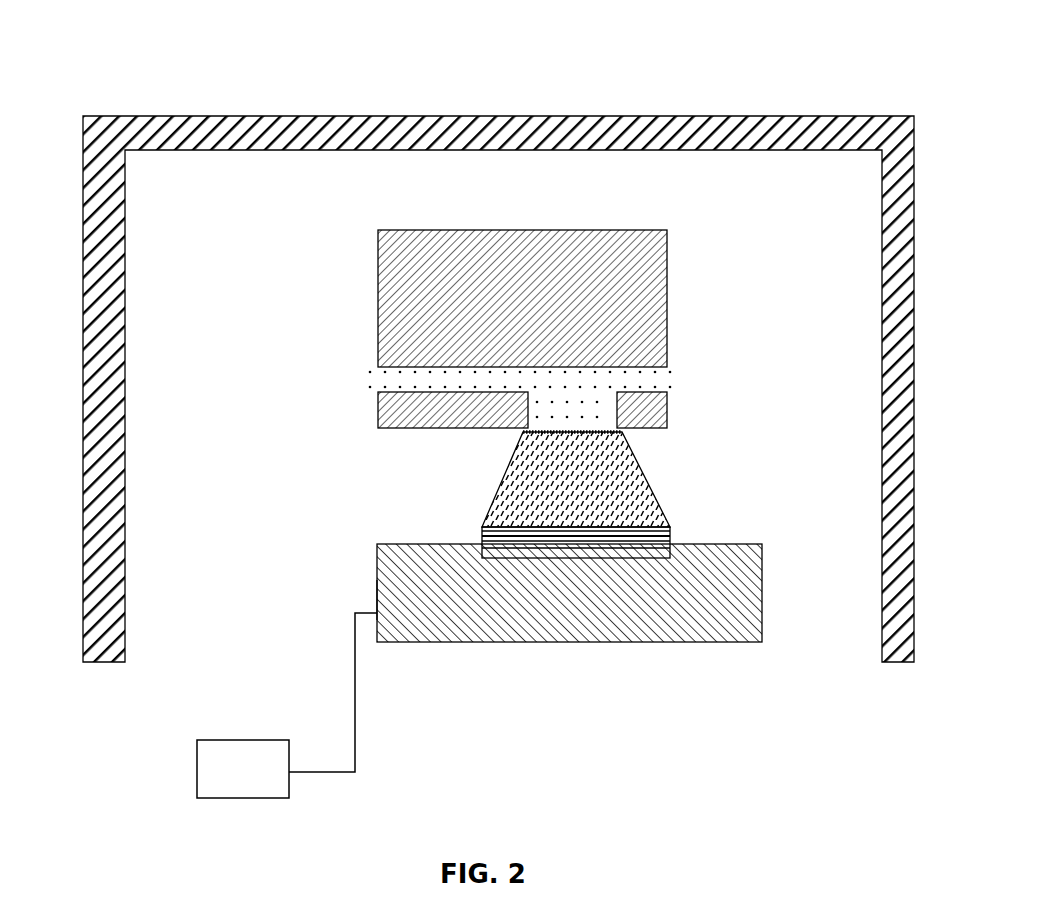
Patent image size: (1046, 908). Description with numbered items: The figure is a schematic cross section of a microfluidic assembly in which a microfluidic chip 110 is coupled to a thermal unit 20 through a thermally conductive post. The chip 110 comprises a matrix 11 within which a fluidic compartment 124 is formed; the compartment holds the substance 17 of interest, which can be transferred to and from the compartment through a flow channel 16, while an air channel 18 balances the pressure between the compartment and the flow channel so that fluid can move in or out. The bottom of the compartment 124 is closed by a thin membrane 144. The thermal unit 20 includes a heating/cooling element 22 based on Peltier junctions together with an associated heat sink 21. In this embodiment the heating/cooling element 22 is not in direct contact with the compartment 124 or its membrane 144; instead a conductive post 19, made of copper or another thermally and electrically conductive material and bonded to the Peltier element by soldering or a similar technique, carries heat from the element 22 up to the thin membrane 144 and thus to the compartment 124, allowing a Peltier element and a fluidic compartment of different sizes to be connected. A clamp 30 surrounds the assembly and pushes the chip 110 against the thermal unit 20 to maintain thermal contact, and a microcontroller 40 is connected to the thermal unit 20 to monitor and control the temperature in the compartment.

The microfluidic chip 110 is at (283, 43).
The clamp 30 is at (497, 117).
The matrix 11 is at (667, 328).
The flow channel 16 is at (673, 374).
The air channel 18 is at (372, 385).
The substance 17 is at (567, 400).
The fluidic compartment 124 is at (528, 400).
The thin membrane 144 is at (622, 433).
The conductive post 19 is at (505, 480).
The heating/cooling element 22 is at (482, 540).
The thermal unit 20 is at (798, 633).
The heat sink 21 is at (377, 595).
The microcontroller 40 is at (242, 798).